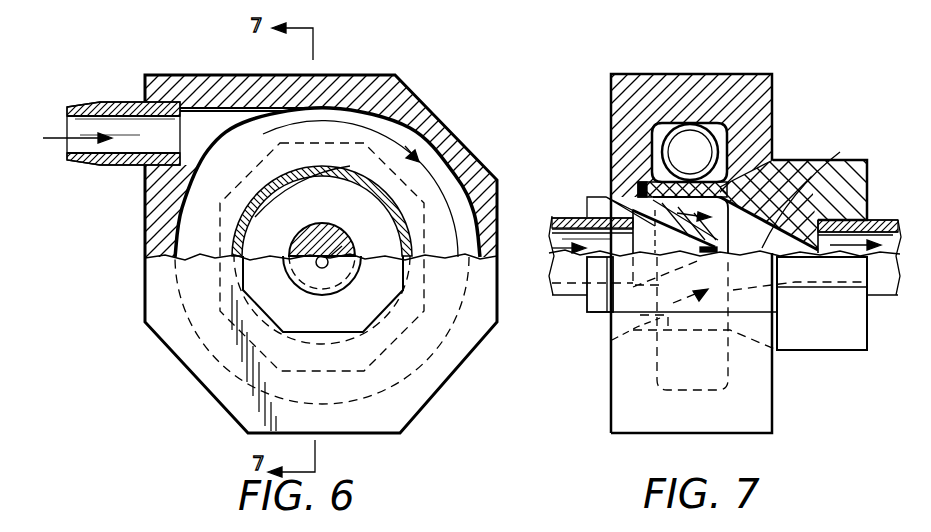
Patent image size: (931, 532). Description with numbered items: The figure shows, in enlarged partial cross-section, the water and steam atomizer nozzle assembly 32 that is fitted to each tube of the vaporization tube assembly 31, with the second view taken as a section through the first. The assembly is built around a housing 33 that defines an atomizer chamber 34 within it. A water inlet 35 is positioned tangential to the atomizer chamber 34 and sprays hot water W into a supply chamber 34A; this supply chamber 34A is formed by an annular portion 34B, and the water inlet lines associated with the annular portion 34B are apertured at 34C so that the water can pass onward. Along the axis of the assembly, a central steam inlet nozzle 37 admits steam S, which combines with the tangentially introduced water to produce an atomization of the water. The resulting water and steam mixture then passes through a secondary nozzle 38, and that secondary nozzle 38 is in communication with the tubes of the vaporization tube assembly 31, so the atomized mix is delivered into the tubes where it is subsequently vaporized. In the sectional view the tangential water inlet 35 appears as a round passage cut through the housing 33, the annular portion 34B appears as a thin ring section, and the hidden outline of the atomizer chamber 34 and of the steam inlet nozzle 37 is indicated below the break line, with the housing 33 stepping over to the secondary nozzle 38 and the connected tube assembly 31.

In FIG. 7, the vaporization tube assembly 31 is at (883, 218).
In FIG. 6, the water and steam atomizer nozzle assembly 32 is at (414, 80).
In FIG. 7, the water and steam atomizer nozzle assembly 32 is at (640, 68).
In FIG. 6, the housing 33 is at (417, 123).
In FIG. 7, the housing 33 is at (760, 128).
In FIG. 6, the atomizer chamber 34 is at (375, 147).
In FIG. 7, the atomizer chamber 34 is at (730, 390).
In FIG. 6, the supply chamber 34A is at (385, 240).
In FIG. 7, the supply chamber 34A is at (630, 197).
In FIG. 6, the annular portion 34B is at (340, 173).
In FIG. 7, the annular portion 34B is at (727, 178).
In FIG. 6, the aperture 34C is at (245, 203).
In FIG. 7, the aperture 34C is at (652, 180).
In FIG. 6, the water inlet 35 is at (153, 133).
In FIG. 7, the water inlet 35 is at (690, 140).
In FIG. 6, the central steam inlet nozzle 37 is at (342, 246).
In FIG. 7, the central steam inlet nozzle 37 is at (612, 340).
In FIG. 7, the secondary nozzle 38 is at (820, 163).
In FIG. 6, the hot water W is at (56, 133).
In FIG. 7, the steam flow S is at (548, 251).